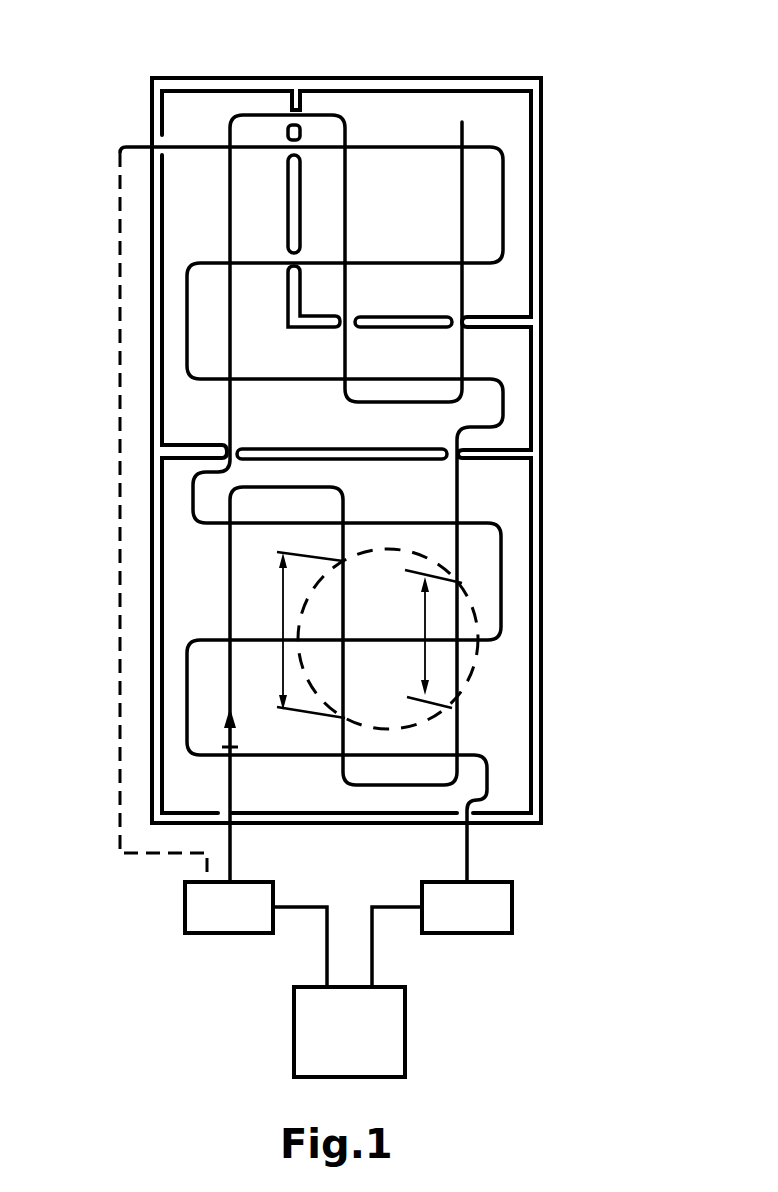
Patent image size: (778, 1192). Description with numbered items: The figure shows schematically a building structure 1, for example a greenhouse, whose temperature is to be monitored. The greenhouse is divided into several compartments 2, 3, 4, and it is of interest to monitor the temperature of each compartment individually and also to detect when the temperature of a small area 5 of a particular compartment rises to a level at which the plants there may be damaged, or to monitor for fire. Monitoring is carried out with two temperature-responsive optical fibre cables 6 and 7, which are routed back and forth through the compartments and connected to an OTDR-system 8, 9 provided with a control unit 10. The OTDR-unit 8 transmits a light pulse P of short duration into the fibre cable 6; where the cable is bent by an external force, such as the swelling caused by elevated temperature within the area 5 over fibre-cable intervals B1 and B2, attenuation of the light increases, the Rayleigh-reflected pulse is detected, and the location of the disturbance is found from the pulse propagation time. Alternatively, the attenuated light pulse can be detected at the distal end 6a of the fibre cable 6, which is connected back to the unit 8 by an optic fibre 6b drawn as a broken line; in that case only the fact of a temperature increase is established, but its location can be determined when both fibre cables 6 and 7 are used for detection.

The building structure 1 is at (546, 579).
The compartment 2 is at (408, 113).
The compartment 3 is at (507, 365).
The compartment 4 is at (502, 727).
The small area 5 is at (460, 688).
The temperature-responsive optical fibre cable 6 is at (325, 476).
The distal end of the fibre cable 6a is at (137, 143).
The optic fibre 6b is at (122, 427).
The temperature-responsive optical fibre cable 7 is at (500, 545).
The OTDR-unit 8 is at (210, 917).
The OTDR-unit 9 is at (478, 917).
The control unit 10 is at (375, 1043).
The light pulse P is at (226, 735).
The fibre-cable interval B1 is at (283, 628).
The fibre-cable interval B2 is at (425, 628).